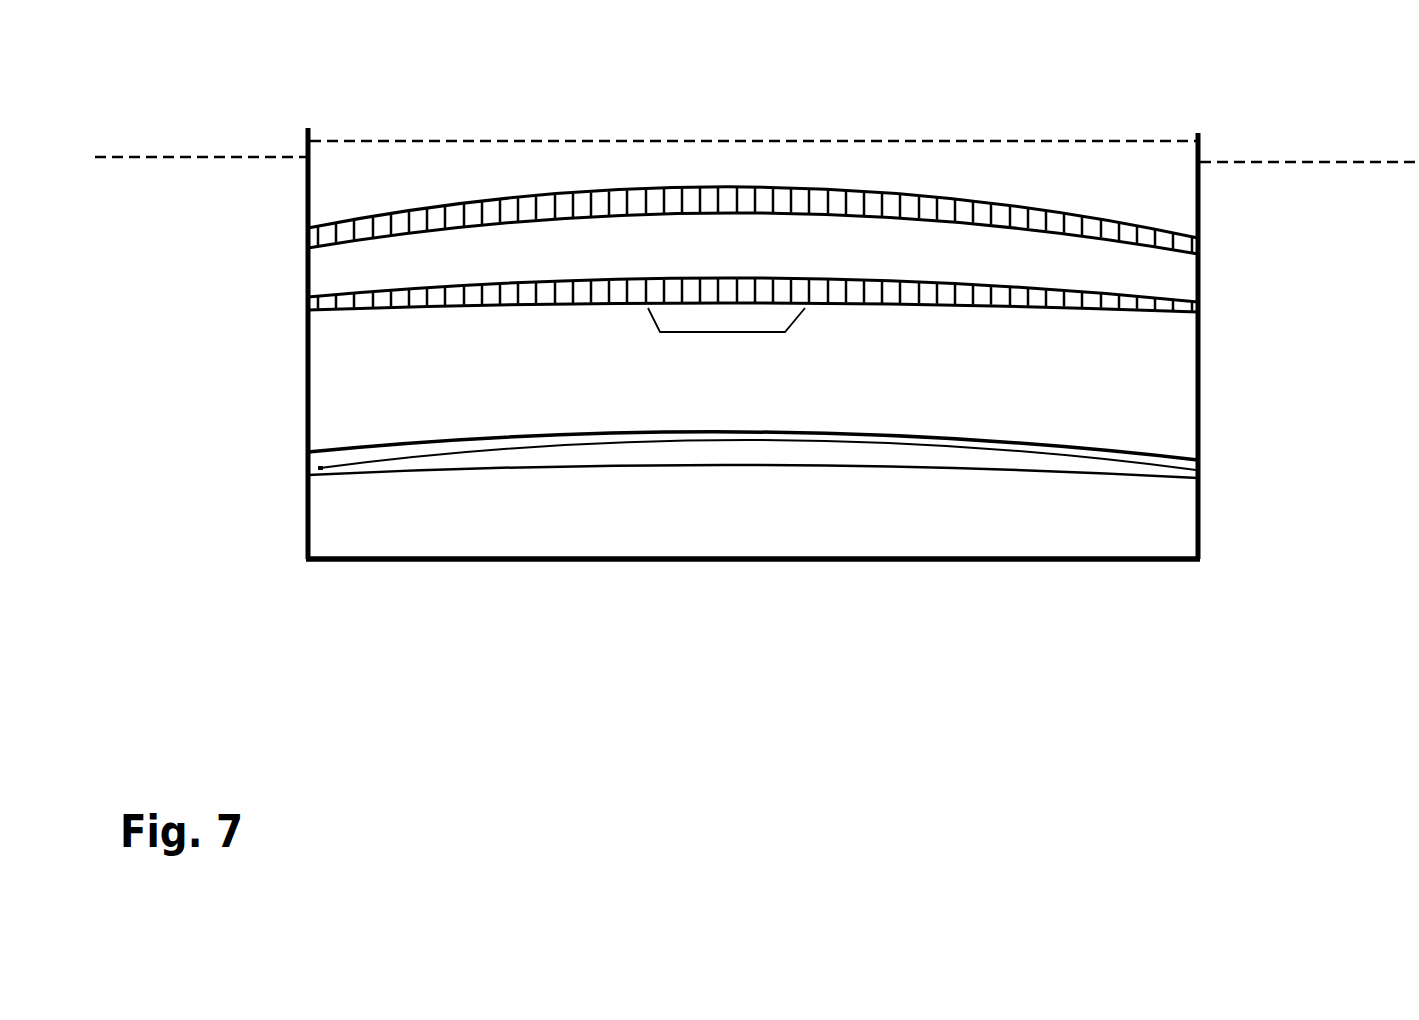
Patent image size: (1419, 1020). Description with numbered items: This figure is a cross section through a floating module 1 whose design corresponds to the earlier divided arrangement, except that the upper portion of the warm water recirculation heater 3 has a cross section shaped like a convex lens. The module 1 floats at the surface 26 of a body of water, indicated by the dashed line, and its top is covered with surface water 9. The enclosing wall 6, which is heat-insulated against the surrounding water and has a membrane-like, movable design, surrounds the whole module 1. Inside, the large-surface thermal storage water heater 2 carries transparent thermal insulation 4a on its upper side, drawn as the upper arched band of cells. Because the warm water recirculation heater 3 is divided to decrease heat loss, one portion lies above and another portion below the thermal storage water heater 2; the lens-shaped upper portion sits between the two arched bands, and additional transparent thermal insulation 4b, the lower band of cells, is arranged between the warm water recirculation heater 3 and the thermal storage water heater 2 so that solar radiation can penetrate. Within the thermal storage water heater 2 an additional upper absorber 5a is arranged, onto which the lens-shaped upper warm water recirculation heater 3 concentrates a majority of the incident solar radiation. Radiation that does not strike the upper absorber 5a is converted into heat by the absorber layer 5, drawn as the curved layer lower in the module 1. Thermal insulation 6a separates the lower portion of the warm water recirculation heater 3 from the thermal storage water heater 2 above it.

The module 1 is at (592, 578).
The thermal storage water heater 2 is at (873, 356).
The warm water recirculation heater 3 is at (808, 256).
The transparent thermal insulation 4a is at (630, 207).
The additional transparent thermal insulation 4b is at (630, 297).
The absorber layer 5 is at (1043, 443).
The upper absorber 5a is at (763, 332).
The wall 6 is at (1097, 563).
The thermal insulation 6a is at (897, 465).
The surface water 9 is at (1032, 177).
The surface 26 is at (147, 150).